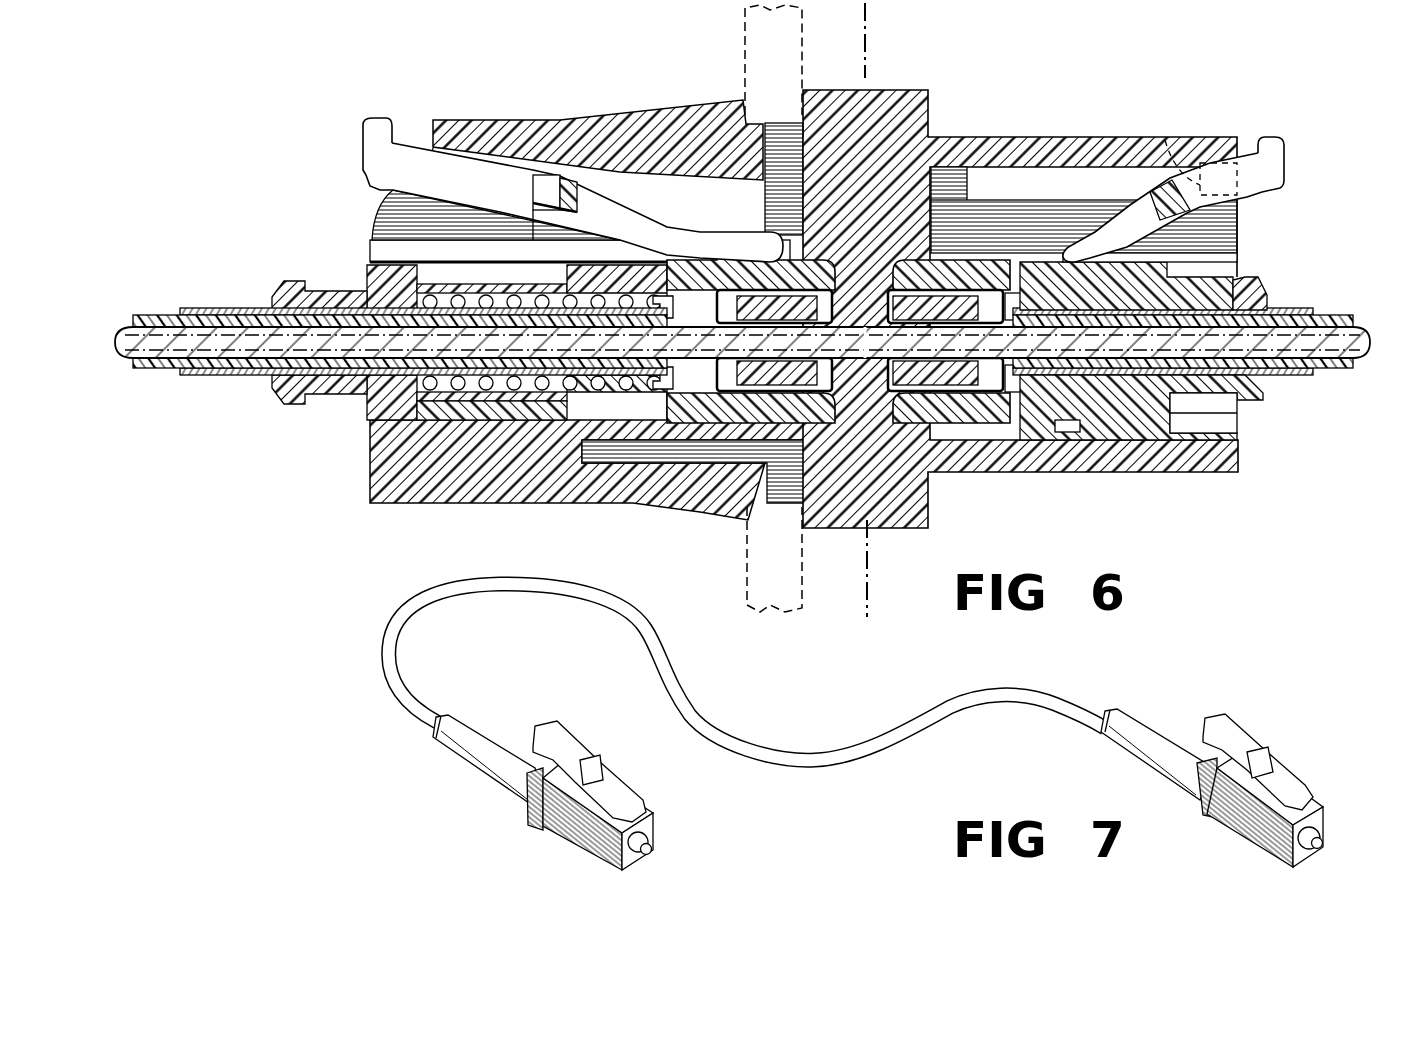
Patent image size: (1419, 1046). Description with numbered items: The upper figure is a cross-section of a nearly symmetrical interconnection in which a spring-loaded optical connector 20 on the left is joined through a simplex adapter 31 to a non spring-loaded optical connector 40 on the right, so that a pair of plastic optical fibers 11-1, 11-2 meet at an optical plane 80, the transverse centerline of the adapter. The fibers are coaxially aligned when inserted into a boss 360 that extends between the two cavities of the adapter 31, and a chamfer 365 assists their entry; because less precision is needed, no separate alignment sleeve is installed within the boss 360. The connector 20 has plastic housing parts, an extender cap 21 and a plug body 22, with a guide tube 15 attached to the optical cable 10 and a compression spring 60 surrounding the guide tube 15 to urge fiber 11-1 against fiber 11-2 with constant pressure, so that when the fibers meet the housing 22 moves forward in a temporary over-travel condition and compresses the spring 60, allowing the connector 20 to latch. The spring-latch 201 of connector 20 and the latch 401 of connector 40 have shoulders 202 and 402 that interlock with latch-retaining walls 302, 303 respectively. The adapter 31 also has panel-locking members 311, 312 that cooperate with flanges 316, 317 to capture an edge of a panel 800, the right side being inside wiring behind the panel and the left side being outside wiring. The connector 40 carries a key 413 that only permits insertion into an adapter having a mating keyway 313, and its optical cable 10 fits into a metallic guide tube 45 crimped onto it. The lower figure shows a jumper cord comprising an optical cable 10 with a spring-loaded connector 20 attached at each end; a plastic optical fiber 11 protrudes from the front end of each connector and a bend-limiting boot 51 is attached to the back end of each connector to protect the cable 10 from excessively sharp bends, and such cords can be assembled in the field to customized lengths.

In FIG. 6, the optical cable 10 is at (140, 315).
In FIG. 7, the optical cable 10 is at (398, 622).
In FIG. 7, the plastic optical fiber 11 is at (657, 840).
In FIG. 6, the plastic optical fiber 11-1 is at (850, 352).
In FIG. 6, the plastic optical fiber 11-2 is at (890, 243).
In FIG. 6, the guide tube 15 is at (222, 312).
In FIG. 6, the spring-loaded optical connector 20 is at (291, 278).
In FIG. 7, the spring-loaded optical connector 20 is at (632, 785).
In FIG. 6, the extender cap 21 is at (364, 288).
In FIG. 6, the plug body 22 is at (694, 226).
In FIG. 6, the simplex adapter 31 is at (927, 80).
In FIG. 6, the non spring-loaded optical connector 40 is at (1037, 230).
In FIG. 6, the guide tube 45 is at (1258, 305).
In FIG. 7, the bend-limiting boot 51 is at (462, 723).
In FIG. 6, the compression spring 60 is at (373, 447).
In FIG. 6, the optical plane 80 is at (867, 72).
In FIG. 6, the spring-latch 201 is at (376, 125).
In FIG. 6, the shoulders 202 is at (560, 180).
In FIG. 6, the latch-retaining wall 302 is at (587, 113).
In FIG. 6, the latch-retaining wall 303 is at (1163, 140).
In FIG. 6, the panel-locking member 311 is at (722, 103).
In FIG. 6, the panel-locking member 312 is at (722, 512).
In FIG. 6, the keyway 313 is at (1232, 423).
In FIG. 6, the flange 316 is at (832, 100).
In FIG. 6, the flange 317 is at (838, 530).
In FIG. 6, the boss 360 is at (940, 380).
In FIG. 6, the chamfer 365 is at (1050, 428).
In FIG. 6, the latch 401 is at (1275, 140).
In FIG. 6, the shoulders 402 is at (1187, 182).
In FIG. 6, the key 413 is at (1133, 423).
In FIG. 6, the panel 800 is at (747, 72).